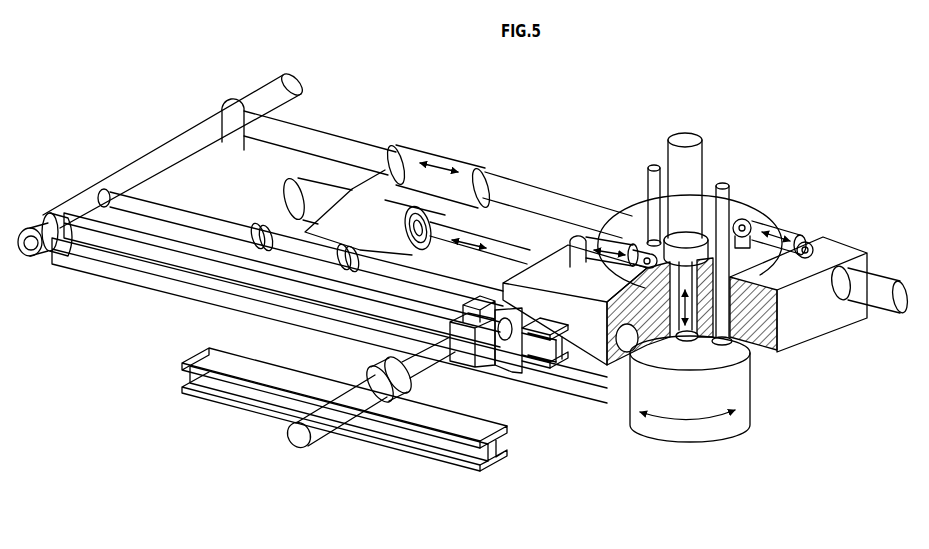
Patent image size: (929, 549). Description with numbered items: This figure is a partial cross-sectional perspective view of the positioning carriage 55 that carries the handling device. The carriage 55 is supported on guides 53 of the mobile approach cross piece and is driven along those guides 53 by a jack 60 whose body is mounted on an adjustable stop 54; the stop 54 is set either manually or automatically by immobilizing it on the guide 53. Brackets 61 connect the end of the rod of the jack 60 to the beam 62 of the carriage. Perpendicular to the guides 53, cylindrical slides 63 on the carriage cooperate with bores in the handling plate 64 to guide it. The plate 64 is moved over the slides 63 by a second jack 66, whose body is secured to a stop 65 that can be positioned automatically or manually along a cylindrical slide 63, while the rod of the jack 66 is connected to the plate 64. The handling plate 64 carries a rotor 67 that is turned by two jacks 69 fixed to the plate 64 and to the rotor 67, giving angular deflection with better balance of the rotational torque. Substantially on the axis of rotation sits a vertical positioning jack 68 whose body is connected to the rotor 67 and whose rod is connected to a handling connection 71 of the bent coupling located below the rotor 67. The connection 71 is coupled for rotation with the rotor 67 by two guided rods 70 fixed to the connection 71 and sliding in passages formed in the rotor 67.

The guides 53 is at (48, 252).
The adjustable stop 54 is at (205, 395).
The positioning carriage 55 is at (182, 148).
The jack 60 is at (313, 447).
The brackets 61 is at (483, 358).
The beam 62 is at (560, 367).
The cylindrical slides 63 is at (130, 198).
The handling plate 64 is at (812, 325).
The stop 65 is at (448, 162).
The jack 66 is at (300, 187).
The rotor 67 is at (735, 217).
The vertical positioning jack 68 is at (680, 145).
The jacks 69 is at (603, 240).
The guided rods 70 is at (652, 175).
The handling connection 71 is at (667, 432).